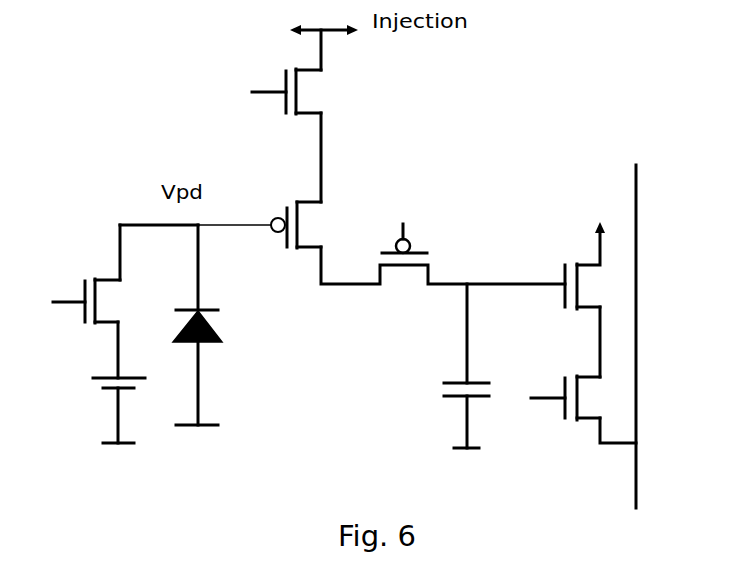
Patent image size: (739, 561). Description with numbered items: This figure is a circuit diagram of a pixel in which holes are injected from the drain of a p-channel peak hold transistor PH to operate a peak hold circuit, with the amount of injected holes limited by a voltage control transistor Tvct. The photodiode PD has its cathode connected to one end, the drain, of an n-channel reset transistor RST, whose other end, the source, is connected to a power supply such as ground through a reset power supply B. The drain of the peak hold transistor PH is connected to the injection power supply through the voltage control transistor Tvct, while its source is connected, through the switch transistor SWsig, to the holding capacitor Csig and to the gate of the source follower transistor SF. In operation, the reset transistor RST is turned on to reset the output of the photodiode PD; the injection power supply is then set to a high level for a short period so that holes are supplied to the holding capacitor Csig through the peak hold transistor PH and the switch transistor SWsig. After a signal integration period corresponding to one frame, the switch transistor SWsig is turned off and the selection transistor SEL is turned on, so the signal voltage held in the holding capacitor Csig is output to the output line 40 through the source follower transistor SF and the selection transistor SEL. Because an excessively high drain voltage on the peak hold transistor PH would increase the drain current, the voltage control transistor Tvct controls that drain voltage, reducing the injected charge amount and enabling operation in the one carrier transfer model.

The output line 40 is at (633, 200).
The voltage control transistor Tvct is at (312, 91).
The peak hold transistor PH is at (302, 225).
The switch transistor SWsig is at (416, 223).
The holding capacitor Csig is at (415, 366).
The source follower transistor SF is at (568, 265).
The selection transistor SEL is at (563, 422).
The reset transistor RST is at (75, 288).
The reset power supply B is at (105, 407).
The photodiode PD is at (214, 325).